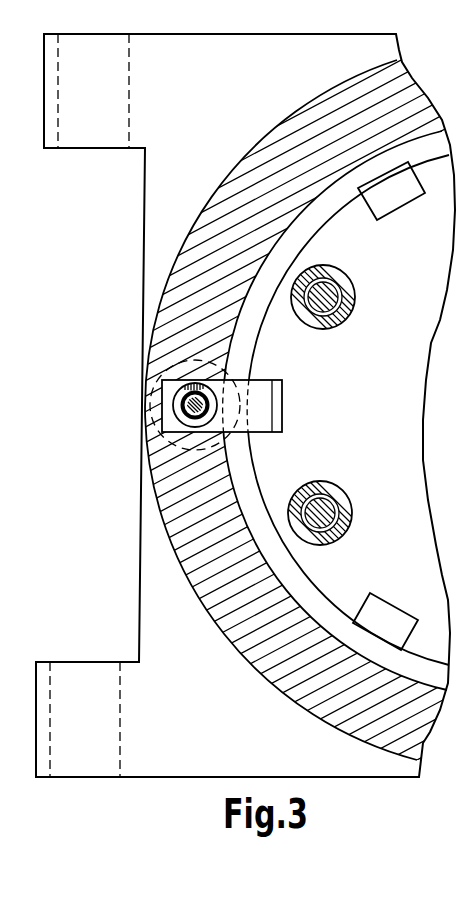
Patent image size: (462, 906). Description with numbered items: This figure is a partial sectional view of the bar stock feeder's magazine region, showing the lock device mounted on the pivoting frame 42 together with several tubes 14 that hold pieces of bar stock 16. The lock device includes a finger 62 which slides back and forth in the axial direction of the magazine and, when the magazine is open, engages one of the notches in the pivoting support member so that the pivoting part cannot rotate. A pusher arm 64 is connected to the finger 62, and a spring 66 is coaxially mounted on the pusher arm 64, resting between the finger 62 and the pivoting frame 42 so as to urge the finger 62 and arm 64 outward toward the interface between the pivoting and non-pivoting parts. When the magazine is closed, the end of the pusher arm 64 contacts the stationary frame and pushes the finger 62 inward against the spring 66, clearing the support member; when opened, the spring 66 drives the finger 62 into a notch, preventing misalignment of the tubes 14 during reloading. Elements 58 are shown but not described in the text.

The tube 14 is at (353, 287).
The bar stock 16 is at (333, 283).
The pivoting frame 42 is at (197, 745).
The locating key block 58 is at (404, 206).
The finger 62 is at (261, 410).
The pusher arm 64 is at (207, 392).
The spring 66 is at (220, 430).